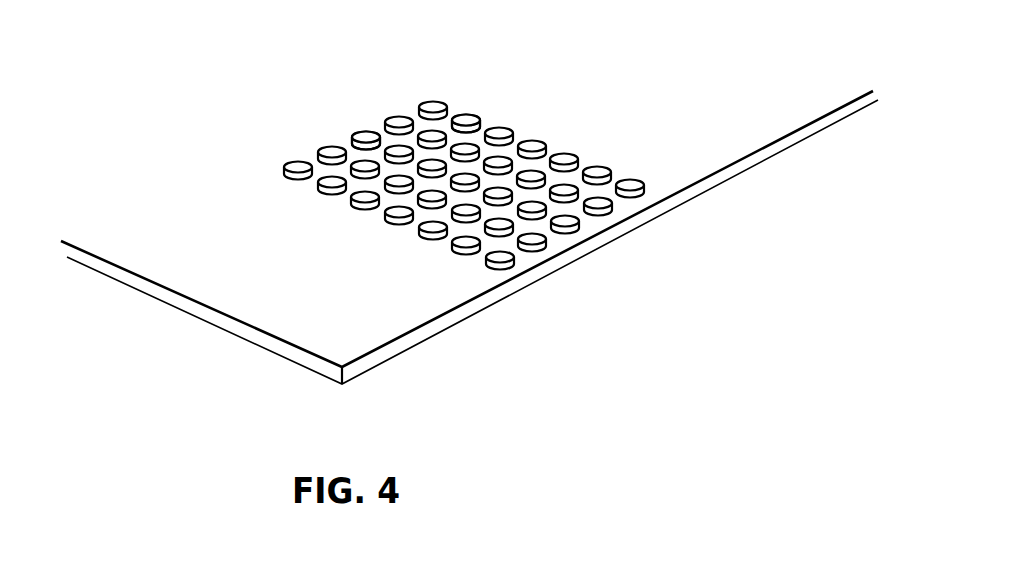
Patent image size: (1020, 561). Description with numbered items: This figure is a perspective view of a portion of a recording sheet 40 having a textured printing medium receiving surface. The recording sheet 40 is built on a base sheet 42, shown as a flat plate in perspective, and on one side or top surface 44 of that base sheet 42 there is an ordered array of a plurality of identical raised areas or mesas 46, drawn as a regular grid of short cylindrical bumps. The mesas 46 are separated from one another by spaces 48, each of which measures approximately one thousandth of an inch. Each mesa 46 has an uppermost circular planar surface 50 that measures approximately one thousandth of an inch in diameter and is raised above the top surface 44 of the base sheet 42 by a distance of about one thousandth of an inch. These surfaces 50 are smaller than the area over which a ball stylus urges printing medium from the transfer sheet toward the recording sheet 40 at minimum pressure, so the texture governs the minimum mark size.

The recording sheet 40 is at (315, 95).
The base sheet 42 is at (398, 348).
The top surface 44 is at (657, 196).
The mesas 46 is at (488, 113).
The spaces 48 is at (377, 127).
The circular planar surface 50 is at (299, 163).